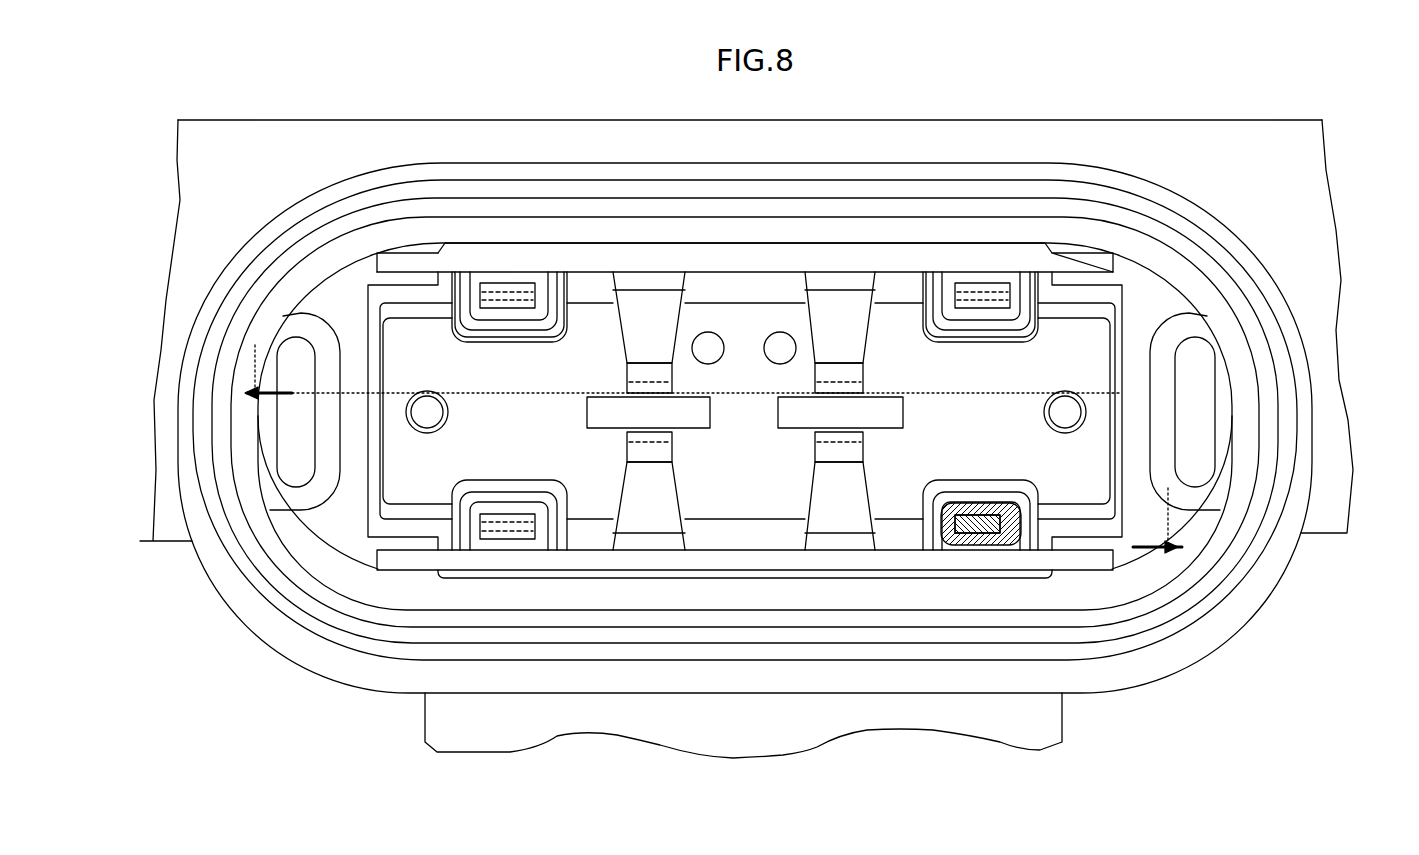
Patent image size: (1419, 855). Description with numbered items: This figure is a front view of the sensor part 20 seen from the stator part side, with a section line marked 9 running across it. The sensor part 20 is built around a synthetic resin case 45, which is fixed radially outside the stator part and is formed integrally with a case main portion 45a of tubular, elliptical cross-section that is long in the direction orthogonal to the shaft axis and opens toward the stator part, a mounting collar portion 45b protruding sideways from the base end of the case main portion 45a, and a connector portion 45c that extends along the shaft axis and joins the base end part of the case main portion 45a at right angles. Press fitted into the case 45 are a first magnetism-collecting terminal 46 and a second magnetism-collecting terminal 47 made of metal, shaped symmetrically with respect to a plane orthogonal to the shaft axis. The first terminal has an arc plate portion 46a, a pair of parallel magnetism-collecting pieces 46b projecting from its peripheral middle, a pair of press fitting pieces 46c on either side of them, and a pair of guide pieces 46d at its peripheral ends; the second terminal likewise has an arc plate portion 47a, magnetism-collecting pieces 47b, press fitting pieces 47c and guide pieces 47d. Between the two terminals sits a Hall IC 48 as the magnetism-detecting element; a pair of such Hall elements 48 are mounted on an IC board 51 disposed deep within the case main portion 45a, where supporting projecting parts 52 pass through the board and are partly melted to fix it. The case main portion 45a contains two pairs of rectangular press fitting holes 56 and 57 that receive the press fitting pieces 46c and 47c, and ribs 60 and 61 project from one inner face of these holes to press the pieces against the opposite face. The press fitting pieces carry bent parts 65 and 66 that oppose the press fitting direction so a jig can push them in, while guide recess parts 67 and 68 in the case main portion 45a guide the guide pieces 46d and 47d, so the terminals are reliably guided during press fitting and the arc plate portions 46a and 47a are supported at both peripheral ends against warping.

The sensor part 20 is at (254, 656).
The case 45 is at (1356, 430).
The case main portion 45a is at (1269, 333).
The mounting collar portion 45b is at (1235, 613).
The connector portion 45c is at (1062, 700).
The first magnetism-collecting terminal 46 is at (822, 572).
The arc plate portion 46a is at (698, 572).
The magnetism-collecting pieces 46b is at (670, 507).
The press fitting pieces 46c is at (488, 490).
The guide pieces 46d is at (437, 562).
The second magnetism-collecting terminal 47 is at (847, 254).
The arc plate portion 47a is at (665, 270).
The magnetism-collecting pieces 47b is at (630, 327).
The press fitting pieces 47c is at (503, 283).
The guide pieces 47d is at (455, 265).
The Hall IC 48 is at (790, 413).
The IC board 51 is at (745, 300).
The supporting projecting parts 52 is at (432, 412).
The press fitting holes 56 is at (523, 542).
The press fitting holes 57 is at (536, 283).
The rib 60 is at (490, 522).
The rib 61 is at (505, 290).
The bent part 65 is at (462, 481).
The bent part 66 is at (483, 296).
The guide recess part 67 is at (390, 605).
The guide recess part 68 is at (388, 257).
The section line 9- 9 is at (713, 435).